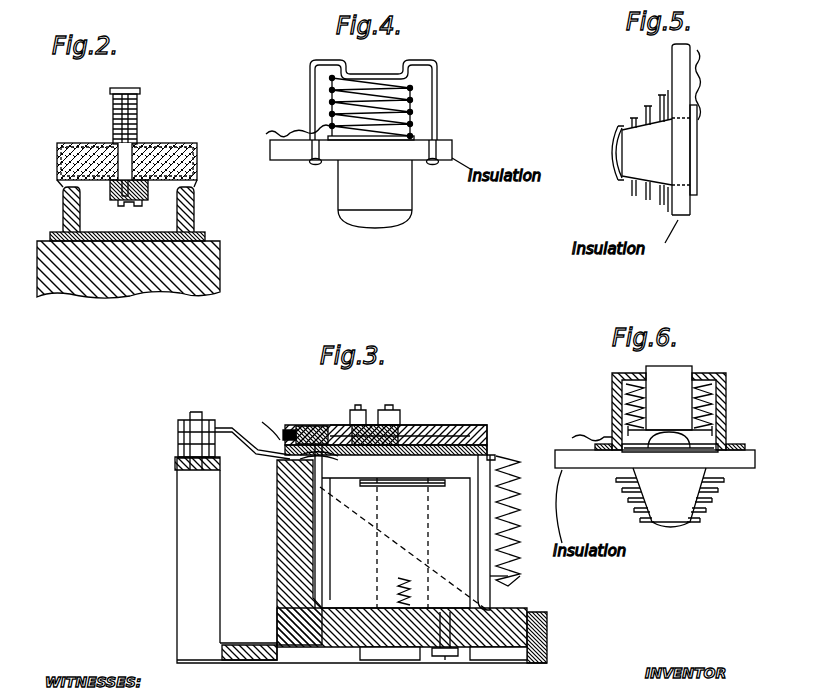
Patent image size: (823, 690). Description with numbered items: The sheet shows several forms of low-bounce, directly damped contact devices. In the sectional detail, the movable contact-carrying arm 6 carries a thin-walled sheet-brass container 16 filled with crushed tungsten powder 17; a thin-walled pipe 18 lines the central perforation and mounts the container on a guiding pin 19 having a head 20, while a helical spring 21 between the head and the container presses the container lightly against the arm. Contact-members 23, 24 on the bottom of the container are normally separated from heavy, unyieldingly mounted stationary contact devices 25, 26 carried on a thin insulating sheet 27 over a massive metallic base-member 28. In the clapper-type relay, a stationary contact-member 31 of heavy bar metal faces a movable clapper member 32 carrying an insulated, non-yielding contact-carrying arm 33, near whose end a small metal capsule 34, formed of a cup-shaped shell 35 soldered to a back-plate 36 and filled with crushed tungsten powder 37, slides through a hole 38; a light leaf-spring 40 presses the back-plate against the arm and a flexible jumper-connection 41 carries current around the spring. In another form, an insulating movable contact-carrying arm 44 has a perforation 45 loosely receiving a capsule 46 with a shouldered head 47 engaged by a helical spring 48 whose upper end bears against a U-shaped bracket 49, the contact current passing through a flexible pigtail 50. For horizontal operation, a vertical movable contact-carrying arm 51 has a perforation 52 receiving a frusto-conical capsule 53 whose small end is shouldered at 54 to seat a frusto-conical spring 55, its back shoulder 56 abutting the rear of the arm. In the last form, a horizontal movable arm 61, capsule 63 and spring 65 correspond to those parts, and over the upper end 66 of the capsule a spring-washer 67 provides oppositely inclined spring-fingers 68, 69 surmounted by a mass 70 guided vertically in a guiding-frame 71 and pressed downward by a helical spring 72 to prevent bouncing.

In FIG. 2, the movable contact-carrying arm 6 is at (140, 202).
In FIG. 2, the container 16 is at (197, 146).
In FIG. 2, the crushed tungsten powder 17 is at (197, 163).
In FIG. 2, the thin-walled pipe 18 is at (140, 156).
In FIG. 2, the guiding pin 19 is at (118, 202).
In FIG. 2, the head 20 is at (132, 90).
In FIG. 2, the helical spring 21 is at (138, 112).
In FIG. 2, the contact-member 23 is at (62, 183).
In FIG. 2, the contact-member 24 is at (190, 183).
In FIG. 2, the stationary contact device 25 is at (63, 206).
In FIG. 2, the stationary contact device 26 is at (194, 209).
In FIG. 2, the thin insulating sheet 27 is at (50, 236).
In FIG. 2, the massive metallic base-member 28 is at (42, 268).
In FIG. 3, the stationary contact-member 31 is at (280, 488).
In FIG. 3, the movable clapper member 32 is at (334, 474).
In FIG. 3, the movable contact-carrying arm 33 is at (363, 428).
In FIG. 3, the metal capsule 34 is at (288, 452).
In FIG. 3, the cup-shaped shell 35 is at (319, 452).
In FIG. 3, the back-plate 36 is at (287, 432).
In FIG. 3, the crushed tungsten powder 37 is at (303, 430).
In FIG. 3, the hole 38 is at (261, 426).
In FIG. 3, the leaf-spring 40 is at (312, 426).
In FIG. 3, the jumper-connection 41 is at (320, 432).
In FIG. 4, the movable contact-carrying arm 44 is at (452, 150).
In FIG. 4, the perforation 45 is at (325, 170).
In FIG. 4, the capsule 46 is at (412, 184).
In FIG. 4, the shouldered head 47 is at (418, 138).
In FIG. 4, the helical spring 48 is at (412, 100).
In FIG. 4, the U-shaped bracket 49 is at (424, 64).
In FIG. 4, the flexible pigtail 50 is at (299, 123).
In FIG. 5, the flexible pigtail 50 is at (706, 60).
In FIG. 6, the flexible pigtail 50 is at (589, 424).
In FIG. 5, the movable contact-carrying arm 51 is at (692, 214).
In FIG. 5, the perforation 52 is at (697, 200).
In FIG. 5, the frusto-conical capsule 53 is at (648, 194).
In FIG. 5, the shoulder 54 is at (618, 130).
In FIG. 5, the frusto-conical spring 55 is at (643, 118).
In FIG. 5, the shoulder 56 is at (698, 192).
In FIG. 6, the movable arm 61 is at (748, 466).
In FIG. 6, the capsule 63 is at (694, 528).
In FIG. 6, the spring 65 is at (708, 506).
In FIG. 6, the upper end 66 is at (626, 452).
In FIG. 6, the spring-washer 67 is at (728, 445).
In FIG. 6, the spring-finger 68 is at (656, 434).
In FIG. 6, the spring-finger 69 is at (684, 432).
In FIG. 6, the mass 70 is at (672, 372).
In FIG. 6, the guiding-frame 71 is at (612, 383).
In FIG. 6, the helical spring 72 is at (712, 410).